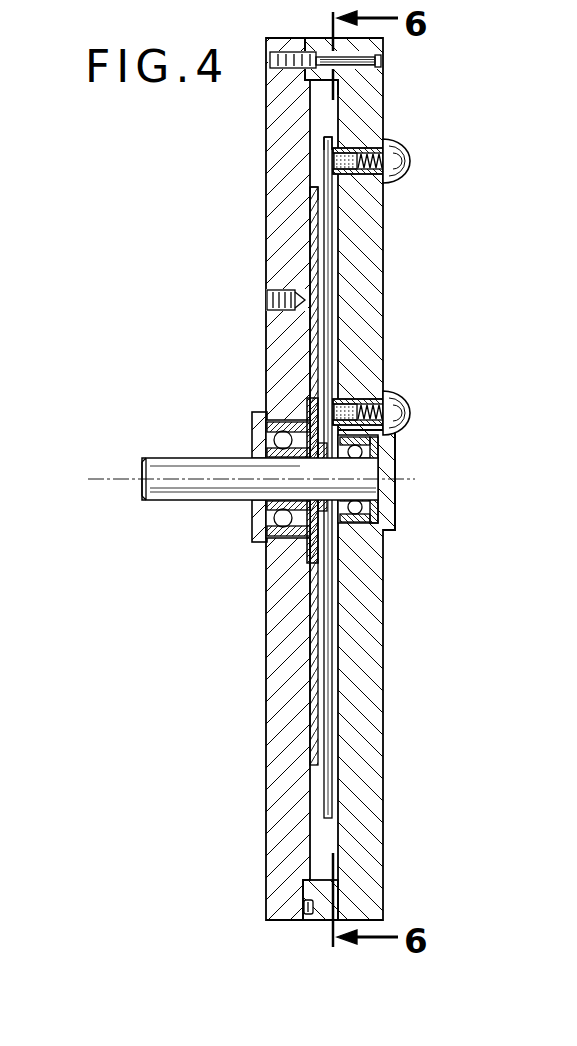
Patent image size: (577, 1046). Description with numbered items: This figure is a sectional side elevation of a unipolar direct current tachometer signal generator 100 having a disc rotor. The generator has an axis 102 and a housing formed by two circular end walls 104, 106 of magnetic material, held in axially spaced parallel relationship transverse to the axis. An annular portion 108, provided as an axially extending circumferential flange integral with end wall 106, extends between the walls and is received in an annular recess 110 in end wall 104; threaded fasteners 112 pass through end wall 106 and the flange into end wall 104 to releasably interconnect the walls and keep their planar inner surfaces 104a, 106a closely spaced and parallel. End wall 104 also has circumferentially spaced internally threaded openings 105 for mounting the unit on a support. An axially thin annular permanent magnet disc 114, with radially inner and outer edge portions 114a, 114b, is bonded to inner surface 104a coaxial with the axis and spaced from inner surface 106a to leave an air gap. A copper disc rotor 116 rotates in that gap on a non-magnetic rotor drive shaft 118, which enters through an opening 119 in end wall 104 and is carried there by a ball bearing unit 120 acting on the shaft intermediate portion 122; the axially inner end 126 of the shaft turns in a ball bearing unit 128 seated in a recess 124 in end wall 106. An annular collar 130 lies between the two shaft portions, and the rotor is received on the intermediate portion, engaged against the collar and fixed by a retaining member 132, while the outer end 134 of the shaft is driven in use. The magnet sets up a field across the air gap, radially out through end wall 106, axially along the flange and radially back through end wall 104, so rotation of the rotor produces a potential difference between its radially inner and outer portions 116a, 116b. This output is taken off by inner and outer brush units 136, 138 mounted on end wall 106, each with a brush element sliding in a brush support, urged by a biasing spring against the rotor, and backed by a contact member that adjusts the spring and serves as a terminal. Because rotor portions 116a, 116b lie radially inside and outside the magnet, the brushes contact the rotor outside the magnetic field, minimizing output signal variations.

The signal generator 100 is at (262, 107).
The axis 102 is at (128, 478).
The end wall 104 is at (292, 252).
The inner surface 104a is at (308, 112).
The internally threaded openings 105 is at (266, 300).
The end wall 106 is at (392, 264).
The inner surface 106a is at (338, 104).
The annular portion 108 is at (318, 892).
The annular recess 110 is at (310, 910).
The threaded fasteners 112 is at (372, 62).
The permanent magnet disc 114 is at (314, 224).
The radially inner edge portion 114a is at (311, 398).
The radially outer edge portion 114b is at (314, 190).
The rotor 116 is at (333, 318).
The radially inner portion 116a is at (326, 430).
The radially outer portion 116b is at (328, 140).
The rotor drive shaft 118 is at (146, 508).
The opening 119 is at (255, 440).
The ball bearing unit 120 is at (256, 543).
The intermediate portion 122 is at (284, 500).
The recess 124 is at (388, 545).
The axially inner end 126 is at (376, 484).
The ball bearing unit 128 is at (370, 512).
The annular collar 130 is at (342, 540).
The retaining member 132 is at (309, 547).
The outer end 134 is at (172, 465).
The inner brush unit 136 is at (424, 408).
The outer brush unit 138 is at (424, 165).